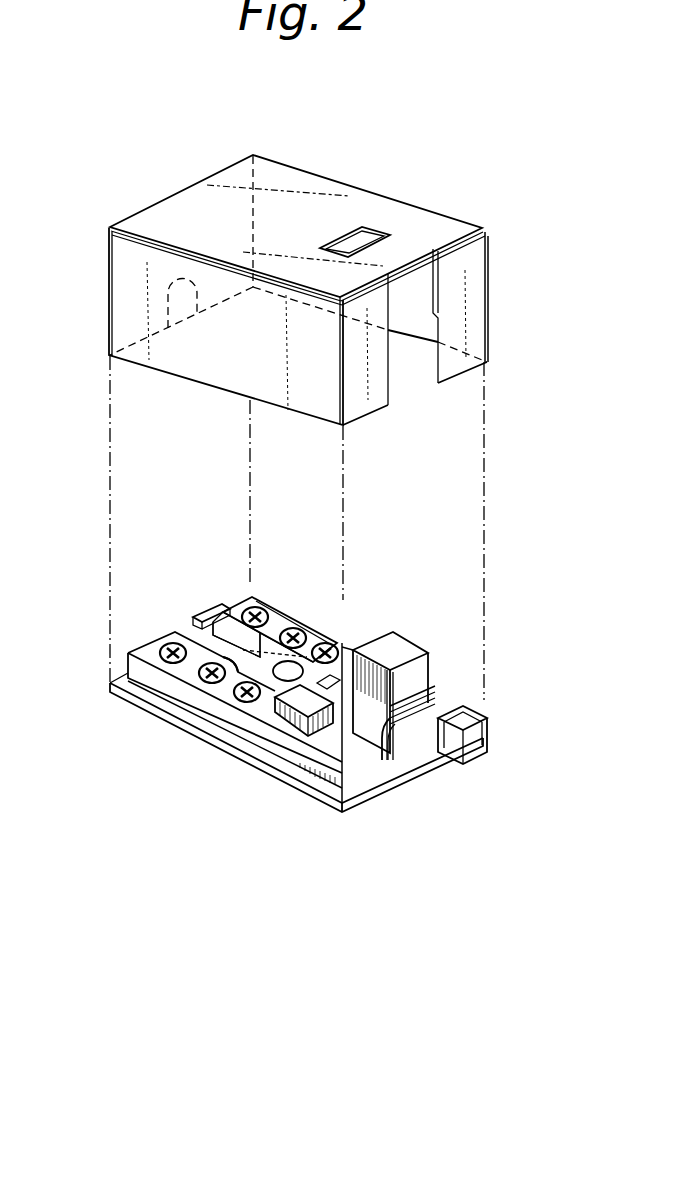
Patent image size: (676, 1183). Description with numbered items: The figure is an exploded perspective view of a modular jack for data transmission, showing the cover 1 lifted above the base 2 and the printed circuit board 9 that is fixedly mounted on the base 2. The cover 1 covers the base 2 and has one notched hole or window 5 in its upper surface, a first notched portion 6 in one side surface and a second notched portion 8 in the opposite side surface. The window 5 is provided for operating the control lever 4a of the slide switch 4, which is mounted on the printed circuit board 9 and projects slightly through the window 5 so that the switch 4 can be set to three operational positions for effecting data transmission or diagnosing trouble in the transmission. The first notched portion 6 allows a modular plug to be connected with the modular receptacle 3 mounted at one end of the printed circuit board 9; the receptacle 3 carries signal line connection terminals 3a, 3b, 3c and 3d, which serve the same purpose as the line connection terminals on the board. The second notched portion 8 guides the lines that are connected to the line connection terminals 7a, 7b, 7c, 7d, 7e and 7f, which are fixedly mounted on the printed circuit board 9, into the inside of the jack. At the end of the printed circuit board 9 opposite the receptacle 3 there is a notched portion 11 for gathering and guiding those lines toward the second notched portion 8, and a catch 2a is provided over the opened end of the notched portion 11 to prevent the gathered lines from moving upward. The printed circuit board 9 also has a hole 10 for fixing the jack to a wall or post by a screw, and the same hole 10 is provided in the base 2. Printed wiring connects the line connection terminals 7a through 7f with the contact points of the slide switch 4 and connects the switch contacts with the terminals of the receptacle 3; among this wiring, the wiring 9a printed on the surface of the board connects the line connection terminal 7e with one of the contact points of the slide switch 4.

The cover 1 is at (340, 192).
The base 2 is at (407, 780).
The catch 2a is at (208, 607).
The modular receptacle 3 is at (412, 616).
The signal line connection terminal 3a is at (477, 722).
The signal line connection terminal 3b is at (457, 738).
The signal line connection terminal 3c is at (430, 723).
The signal line connection terminal 3d is at (415, 727).
The slide switch 4 is at (285, 740).
The control lever 4a is at (333, 676).
The notched hole 5 is at (362, 232).
The first notched portion 6 is at (415, 378).
The line connection terminal 7a is at (258, 607).
The line connection terminal 7b is at (293, 628).
The line connection terminal 7c is at (328, 642).
The line connection terminal 7d is at (165, 665).
The line connection terminal 7e is at (205, 685).
The line connection terminal 7f is at (240, 704).
The second notched portion 8 is at (165, 303).
The printed circuit board 9 is at (322, 613).
The wiring 9a is at (222, 660).
The hole 10 is at (283, 676).
The notched portion 11 is at (237, 612).